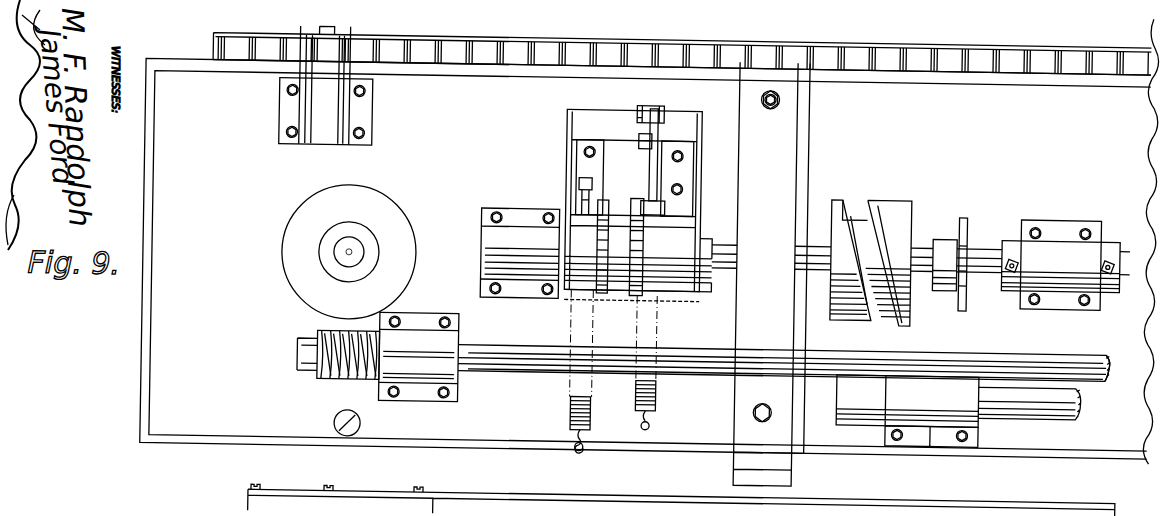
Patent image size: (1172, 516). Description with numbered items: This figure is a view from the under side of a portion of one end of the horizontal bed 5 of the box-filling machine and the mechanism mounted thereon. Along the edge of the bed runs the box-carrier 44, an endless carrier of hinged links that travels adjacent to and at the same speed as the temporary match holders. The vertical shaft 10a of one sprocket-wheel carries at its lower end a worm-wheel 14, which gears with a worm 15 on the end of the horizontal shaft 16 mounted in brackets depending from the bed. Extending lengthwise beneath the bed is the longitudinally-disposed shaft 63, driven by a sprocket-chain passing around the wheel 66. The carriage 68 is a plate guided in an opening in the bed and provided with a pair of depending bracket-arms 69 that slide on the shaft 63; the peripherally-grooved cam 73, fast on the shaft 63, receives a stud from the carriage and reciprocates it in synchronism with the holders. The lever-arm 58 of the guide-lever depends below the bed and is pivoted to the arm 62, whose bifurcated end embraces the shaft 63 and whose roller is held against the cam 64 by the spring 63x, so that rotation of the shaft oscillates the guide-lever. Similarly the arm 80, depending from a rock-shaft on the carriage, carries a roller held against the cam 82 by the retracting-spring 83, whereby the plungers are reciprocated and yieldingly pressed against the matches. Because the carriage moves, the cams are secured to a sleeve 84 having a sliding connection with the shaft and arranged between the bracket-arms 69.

The horizontal bed 5 is at (650, 233).
The vertical shaft 10a is at (345, 255).
The worm-wheel 14 is at (268, 282).
The worm 15 is at (333, 381).
The horizontal shaft 16 is at (516, 374).
The box-carrier 44 is at (426, 42).
The lever-arm 58 is at (645, 148).
The arm 62 is at (657, 146).
The longitudinally-disposed shaft 63 is at (753, 252).
The spring 63x is at (660, 398).
The cam 64 is at (650, 296).
The sprocket-wheel 66 is at (966, 214).
The carriage 68 is at (565, 114).
The depending bracket-arms 69 is at (567, 181).
The peripherally-grooved cam 73 is at (879, 196).
The arm 80 is at (581, 208).
The cam 82 is at (597, 292).
The retracting-spring 83 is at (571, 417).
The sleeve 84 is at (621, 297).